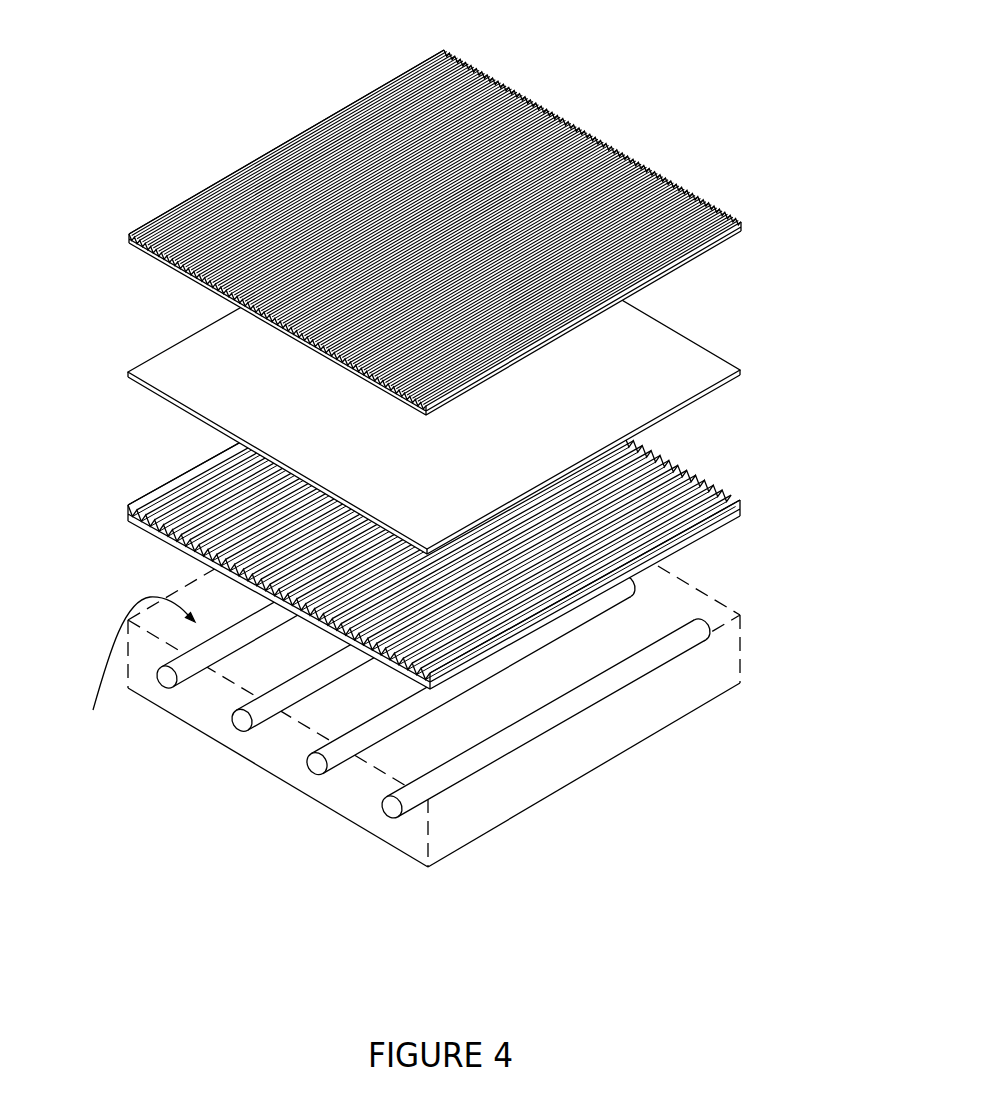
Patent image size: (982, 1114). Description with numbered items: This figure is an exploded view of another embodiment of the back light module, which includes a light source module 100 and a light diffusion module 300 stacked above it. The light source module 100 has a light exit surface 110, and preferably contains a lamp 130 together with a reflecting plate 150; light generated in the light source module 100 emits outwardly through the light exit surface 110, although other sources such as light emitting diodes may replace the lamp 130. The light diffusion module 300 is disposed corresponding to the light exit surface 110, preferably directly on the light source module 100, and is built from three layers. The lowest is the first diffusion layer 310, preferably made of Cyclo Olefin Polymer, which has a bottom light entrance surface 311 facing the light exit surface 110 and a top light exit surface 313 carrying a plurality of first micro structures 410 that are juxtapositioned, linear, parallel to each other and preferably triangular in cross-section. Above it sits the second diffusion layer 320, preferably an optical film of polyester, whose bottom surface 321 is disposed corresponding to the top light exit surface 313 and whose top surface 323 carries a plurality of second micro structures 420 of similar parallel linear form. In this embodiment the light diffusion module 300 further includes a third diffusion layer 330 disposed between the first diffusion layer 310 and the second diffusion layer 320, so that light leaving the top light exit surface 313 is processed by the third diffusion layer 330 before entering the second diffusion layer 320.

The light source module 100 is at (469, 653).
The light exit surface 110 is at (134, 675).
The lamp 130 is at (410, 800).
The reflecting plate 150 is at (357, 788).
The light diffusion module 300 is at (113, 222).
The first diffusion layer 310 is at (470, 510).
The bottom light entrance surface 311 is at (708, 542).
The top light exit surface 313 is at (668, 490).
The first micro structures 410 is at (707, 487).
The second diffusion layer 320 is at (463, 214).
The bottom surface 321 is at (690, 262).
The top surface 323 is at (493, 126).
The second micro structures 420 is at (603, 145).
The third diffusion layer 330 is at (690, 365).